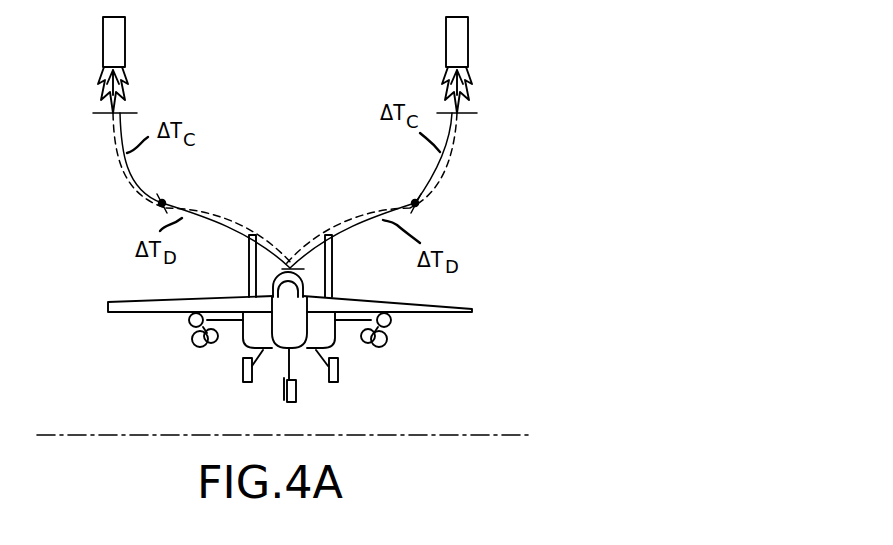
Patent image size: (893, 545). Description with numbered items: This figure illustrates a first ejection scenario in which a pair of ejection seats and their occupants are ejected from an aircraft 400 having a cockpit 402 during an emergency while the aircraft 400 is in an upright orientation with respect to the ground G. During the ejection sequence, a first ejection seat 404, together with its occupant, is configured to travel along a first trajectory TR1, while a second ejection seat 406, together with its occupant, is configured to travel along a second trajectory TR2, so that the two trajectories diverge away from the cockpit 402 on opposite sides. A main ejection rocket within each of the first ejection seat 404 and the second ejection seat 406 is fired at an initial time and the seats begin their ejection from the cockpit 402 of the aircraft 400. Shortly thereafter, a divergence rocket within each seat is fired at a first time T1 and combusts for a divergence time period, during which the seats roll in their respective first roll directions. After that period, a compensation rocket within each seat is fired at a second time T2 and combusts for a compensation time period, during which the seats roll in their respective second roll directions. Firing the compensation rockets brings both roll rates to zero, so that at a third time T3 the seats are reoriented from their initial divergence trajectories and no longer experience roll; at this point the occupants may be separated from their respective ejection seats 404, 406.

The aircraft 400 is at (105, 278).
The cockpit 402 is at (297, 287).
The first ejection seat 404 is at (468, 33).
The second ejection seat 406 is at (126, 33).
The first trajectory TR1 is at (440, 181).
The second trajectory TR2 is at (115, 143).
The first time T1 is at (290, 270).
The second time T2 is at (450, 223).
The third time T3 is at (130, 110).
The ground G is at (465, 437).